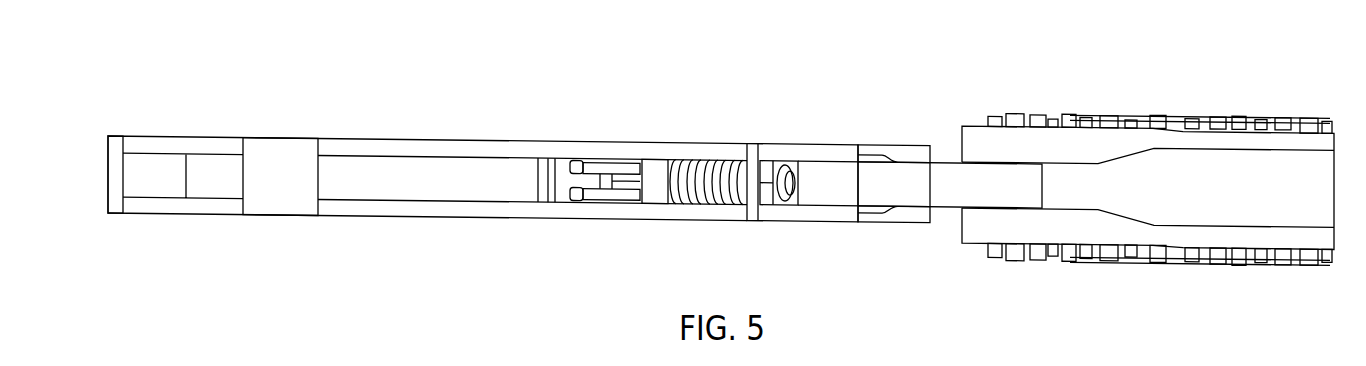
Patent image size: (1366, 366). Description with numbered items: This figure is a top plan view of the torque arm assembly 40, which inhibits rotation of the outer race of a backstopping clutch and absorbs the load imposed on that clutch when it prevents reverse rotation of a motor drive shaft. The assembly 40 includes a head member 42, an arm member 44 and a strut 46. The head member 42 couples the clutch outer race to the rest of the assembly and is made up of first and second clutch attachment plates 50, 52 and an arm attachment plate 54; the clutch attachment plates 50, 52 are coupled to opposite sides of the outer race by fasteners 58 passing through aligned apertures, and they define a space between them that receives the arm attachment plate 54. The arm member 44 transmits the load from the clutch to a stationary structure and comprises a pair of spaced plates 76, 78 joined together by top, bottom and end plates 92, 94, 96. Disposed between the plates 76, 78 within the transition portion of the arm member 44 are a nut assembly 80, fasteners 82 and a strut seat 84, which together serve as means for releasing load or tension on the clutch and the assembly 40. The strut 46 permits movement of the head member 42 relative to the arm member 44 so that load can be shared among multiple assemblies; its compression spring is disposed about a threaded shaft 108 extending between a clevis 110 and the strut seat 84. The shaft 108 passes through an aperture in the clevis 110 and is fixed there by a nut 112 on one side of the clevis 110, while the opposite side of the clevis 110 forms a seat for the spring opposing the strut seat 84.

The torque arm assembly 40 is at (866, 92).
The head member 42 is at (970, 265).
The arm member 44 is at (360, 230).
The strut 46 is at (710, 165).
The first clutch attachment plate 50 is at (1120, 232).
The second clutch attachment plate 52 is at (1163, 137).
The arm attachment plate 54 is at (952, 183).
The fasteners 58 is at (1278, 255).
The plate 76 is at (478, 205).
The plate 78 is at (440, 148).
The nut assembly 80 is at (562, 158).
The fasteners 82 is at (620, 190).
The strut seat 84 is at (653, 190).
The top plate 92 is at (283, 160).
The bottom plate 94 is at (113, 170).
The end plate 96 is at (165, 182).
The threaded shaft 108 is at (790, 172).
The clevis 110 is at (784, 212).
The nut 112 is at (778, 170).